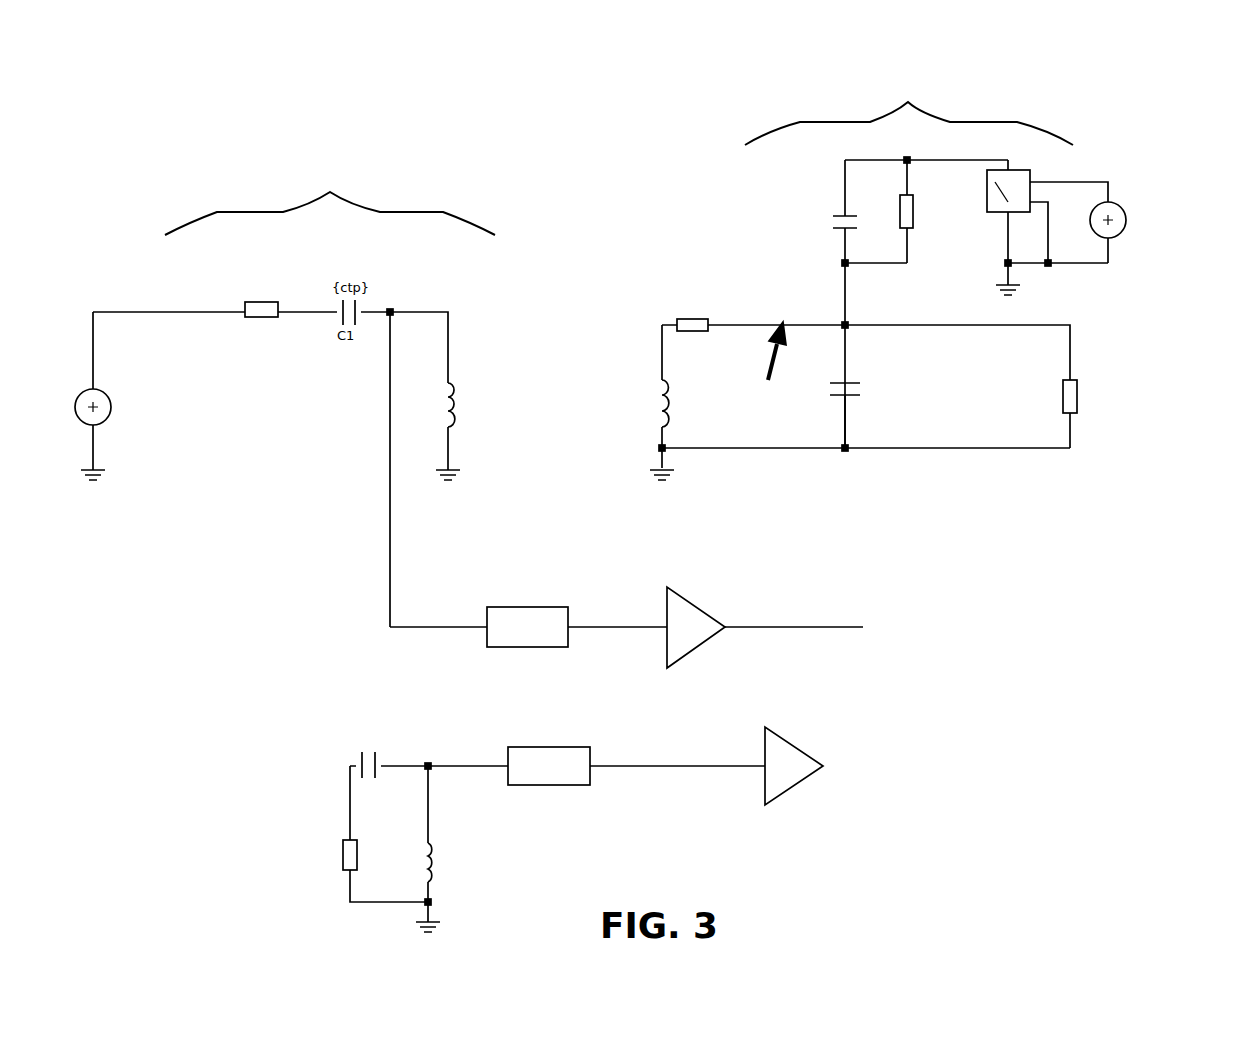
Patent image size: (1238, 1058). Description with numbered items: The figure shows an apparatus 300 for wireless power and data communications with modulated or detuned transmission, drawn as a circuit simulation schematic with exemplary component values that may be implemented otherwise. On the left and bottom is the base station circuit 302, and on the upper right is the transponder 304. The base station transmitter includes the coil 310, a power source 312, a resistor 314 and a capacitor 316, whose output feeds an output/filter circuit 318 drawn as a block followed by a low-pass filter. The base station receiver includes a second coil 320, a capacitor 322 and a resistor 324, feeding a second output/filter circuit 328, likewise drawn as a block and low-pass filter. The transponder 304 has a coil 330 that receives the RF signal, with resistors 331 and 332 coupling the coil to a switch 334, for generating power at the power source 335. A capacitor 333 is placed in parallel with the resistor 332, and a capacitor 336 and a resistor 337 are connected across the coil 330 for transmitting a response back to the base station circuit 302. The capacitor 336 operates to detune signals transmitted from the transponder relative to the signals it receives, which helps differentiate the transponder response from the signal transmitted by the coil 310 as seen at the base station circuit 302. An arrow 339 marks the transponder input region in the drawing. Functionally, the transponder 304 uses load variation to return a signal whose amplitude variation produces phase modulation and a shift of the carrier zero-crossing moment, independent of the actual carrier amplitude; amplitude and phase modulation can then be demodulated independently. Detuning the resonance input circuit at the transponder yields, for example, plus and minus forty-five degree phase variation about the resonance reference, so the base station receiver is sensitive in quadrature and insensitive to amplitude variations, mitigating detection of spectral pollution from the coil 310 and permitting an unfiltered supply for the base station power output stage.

The apparatus 300 is at (1160, 80).
The base station circuit 302 is at (330, 200).
The transponder 304 is at (909, 112).
The coil 310 is at (449, 383).
The power source 312 is at (103, 393).
The resistor 314 is at (278, 300).
The capacitor 316 is at (357, 312).
The output/filter circuit 318 is at (692, 534).
The second coil 320 is at (430, 837).
The capacitor 322 is at (362, 763).
The resistor 324 is at (350, 840).
The output/filter circuit 328 is at (785, 850).
The coil 330 is at (663, 380).
The resistor 331 is at (712, 325).
The resistor 332 is at (906, 197).
The capacitor 333 is at (840, 212).
The switch 334 is at (1012, 173).
The power source 335 is at (1115, 207).
The capacitor 336 is at (842, 382).
The resistor 337 is at (1067, 380).
The current direction arrow 339 is at (764, 366).